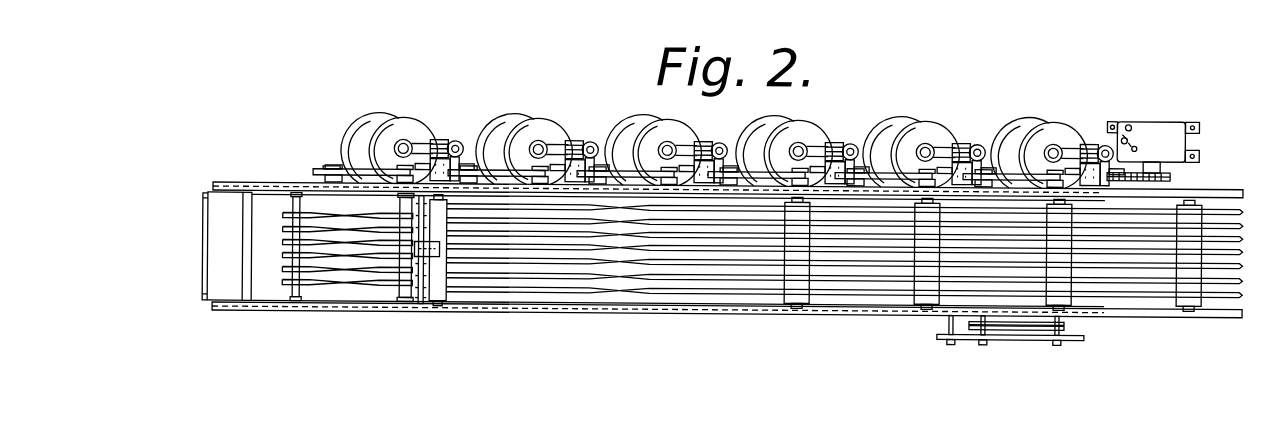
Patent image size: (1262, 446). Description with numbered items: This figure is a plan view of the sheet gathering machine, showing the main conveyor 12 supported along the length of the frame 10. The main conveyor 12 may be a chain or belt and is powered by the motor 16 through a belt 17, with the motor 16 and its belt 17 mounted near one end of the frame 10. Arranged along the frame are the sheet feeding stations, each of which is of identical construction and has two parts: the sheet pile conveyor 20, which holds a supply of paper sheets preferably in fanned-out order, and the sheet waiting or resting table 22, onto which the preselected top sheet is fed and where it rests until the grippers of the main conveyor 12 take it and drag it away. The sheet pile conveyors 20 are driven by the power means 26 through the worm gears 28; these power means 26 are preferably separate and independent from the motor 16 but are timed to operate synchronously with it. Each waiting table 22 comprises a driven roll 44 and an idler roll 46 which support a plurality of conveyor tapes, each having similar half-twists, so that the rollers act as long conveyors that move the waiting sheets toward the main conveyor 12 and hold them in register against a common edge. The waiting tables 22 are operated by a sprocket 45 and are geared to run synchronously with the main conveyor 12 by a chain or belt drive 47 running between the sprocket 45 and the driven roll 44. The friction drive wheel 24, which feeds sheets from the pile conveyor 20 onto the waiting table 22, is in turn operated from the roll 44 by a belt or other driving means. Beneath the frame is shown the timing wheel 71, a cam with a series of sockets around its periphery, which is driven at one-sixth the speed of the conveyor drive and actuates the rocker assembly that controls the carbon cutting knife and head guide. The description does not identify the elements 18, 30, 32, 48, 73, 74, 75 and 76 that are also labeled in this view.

The frame 10 is at (518, 310).
The main conveyor 12 is at (612, 312).
The motor 16 is at (1160, 119).
The belt 17 is at (1172, 173).
The end block 18 is at (203, 200).
The sheet pile conveyor 20 is at (558, 270).
The sheet waiting or resting table 22 is at (375, 266).
The friction drive wheel 24 is at (447, 252).
The power means 26 is at (405, 114).
The worm gears 28 is at (440, 138).
The strand twist 30 is at (723, 262).
The guide block 32 is at (440, 302).
The driven roll 44 is at (410, 302).
The sprocket 45 is at (317, 167).
The idler roll 46 is at (296, 300).
The chain or belt drive 47 is at (347, 167).
The upper rail 48 is at (298, 183).
The timing wheel 71 is at (1012, 326).
The base plate 73 is at (1085, 335).
The right post 74 is at (1045, 336).
The left post 75 is at (940, 340).
The middle post 76 is at (982, 340).